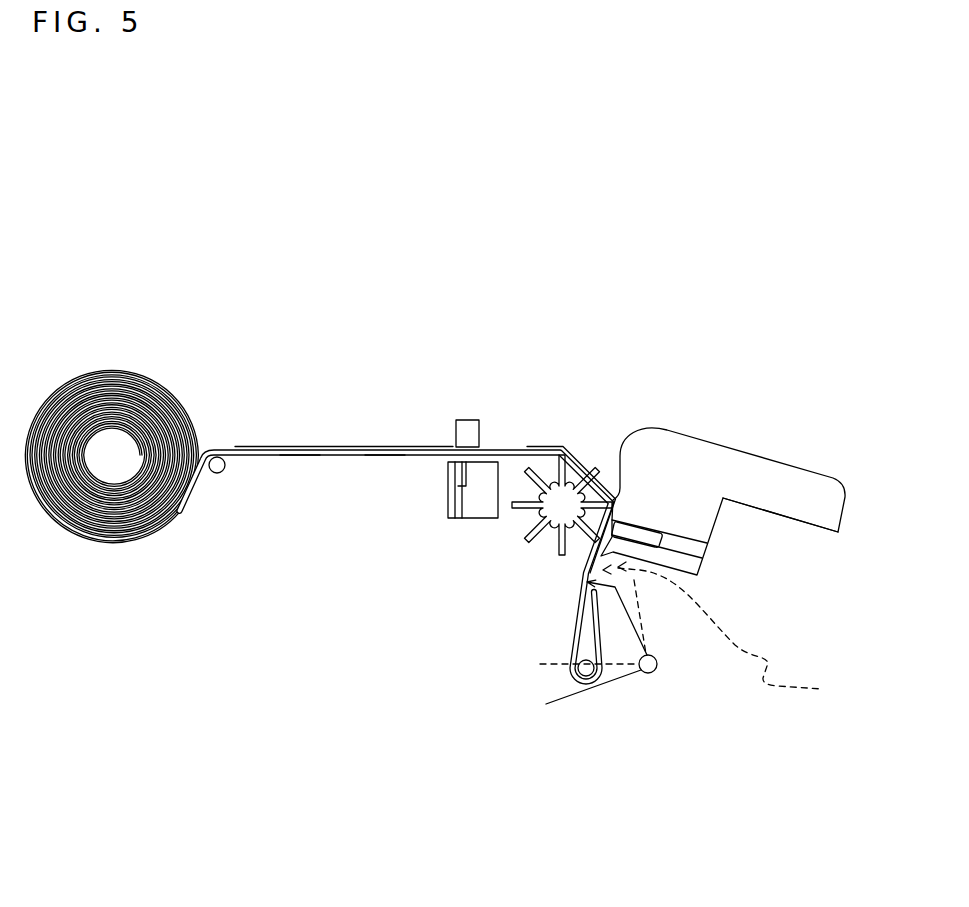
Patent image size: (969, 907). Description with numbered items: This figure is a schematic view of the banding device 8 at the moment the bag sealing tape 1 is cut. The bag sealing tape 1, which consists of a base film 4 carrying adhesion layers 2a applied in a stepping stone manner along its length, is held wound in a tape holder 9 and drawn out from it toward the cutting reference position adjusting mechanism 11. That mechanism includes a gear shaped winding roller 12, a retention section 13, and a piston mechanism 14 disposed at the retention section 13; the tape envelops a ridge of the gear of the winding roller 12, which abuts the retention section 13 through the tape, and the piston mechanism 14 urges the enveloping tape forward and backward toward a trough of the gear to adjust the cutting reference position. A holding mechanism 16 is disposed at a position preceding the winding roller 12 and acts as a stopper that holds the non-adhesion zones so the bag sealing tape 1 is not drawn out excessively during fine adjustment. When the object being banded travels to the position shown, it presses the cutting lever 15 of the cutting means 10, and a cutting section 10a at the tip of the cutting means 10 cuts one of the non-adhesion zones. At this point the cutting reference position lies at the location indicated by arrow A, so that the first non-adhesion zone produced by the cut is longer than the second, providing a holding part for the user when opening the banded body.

The bag sealing tape 1 is at (368, 442).
The adhesion layer 2a is at (298, 457).
The base film 4 is at (383, 457).
The banding device 8 is at (322, 352).
The tape holder 9 is at (147, 360).
The cutting means 10 is at (625, 690).
The cutting section 10a is at (738, 634).
The cutting reference position adjusting mechanism 11 is at (790, 447).
The winding roller 12 is at (570, 493).
The retention section 13 is at (822, 512).
The piston mechanism 14 is at (647, 532).
The cutting lever 15 is at (570, 688).
The holding mechanism 16 is at (486, 412).
The arrow A is at (576, 582).